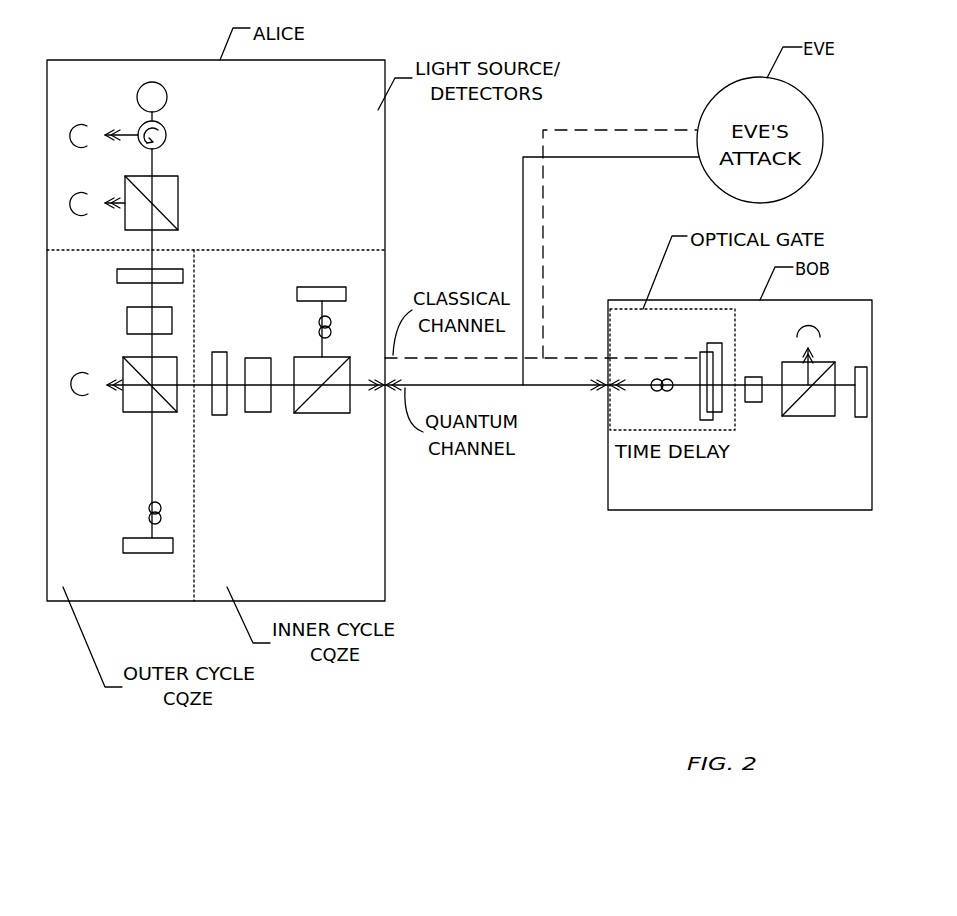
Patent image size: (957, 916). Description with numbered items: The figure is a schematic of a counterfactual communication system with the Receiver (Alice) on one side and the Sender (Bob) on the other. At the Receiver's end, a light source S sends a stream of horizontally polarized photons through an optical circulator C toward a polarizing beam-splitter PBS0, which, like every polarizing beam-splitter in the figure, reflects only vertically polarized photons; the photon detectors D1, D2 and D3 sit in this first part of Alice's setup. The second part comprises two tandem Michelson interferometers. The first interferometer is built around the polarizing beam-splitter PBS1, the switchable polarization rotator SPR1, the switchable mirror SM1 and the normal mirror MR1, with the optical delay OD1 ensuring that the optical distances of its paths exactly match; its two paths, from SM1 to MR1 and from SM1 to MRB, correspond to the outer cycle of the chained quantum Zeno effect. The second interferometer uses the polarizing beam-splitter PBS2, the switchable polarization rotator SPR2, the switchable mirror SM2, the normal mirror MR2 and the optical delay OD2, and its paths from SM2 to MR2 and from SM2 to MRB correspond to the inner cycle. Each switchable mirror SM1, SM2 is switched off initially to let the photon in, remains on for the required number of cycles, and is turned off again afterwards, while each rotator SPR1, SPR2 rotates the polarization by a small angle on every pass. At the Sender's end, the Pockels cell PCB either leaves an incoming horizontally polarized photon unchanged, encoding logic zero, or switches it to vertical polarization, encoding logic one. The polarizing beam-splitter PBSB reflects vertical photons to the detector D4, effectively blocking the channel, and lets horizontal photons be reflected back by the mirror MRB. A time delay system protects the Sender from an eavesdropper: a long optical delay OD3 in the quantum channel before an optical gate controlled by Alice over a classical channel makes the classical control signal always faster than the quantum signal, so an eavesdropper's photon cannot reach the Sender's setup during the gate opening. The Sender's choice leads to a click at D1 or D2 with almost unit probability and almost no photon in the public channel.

The light source S is at (163, 101).
The optical circulator C is at (147, 135).
The photon detector D1 is at (74, 122).
The photon detector D2 is at (74, 221).
The photon detector D3 is at (77, 403).
The photon detector D4 is at (822, 330).
The polarizing beam-splitter PBS0 is at (169, 203).
The polarizing beam-splitter PBS1 is at (136, 415).
The polarizing beam-splitter PBS2 is at (322, 404).
The polarizing beam-splitter PBSB is at (808, 401).
The switchable mirror SM1 is at (122, 281).
The switchable mirror SM2 is at (220, 403).
The switchable polarization rotator SPR1 is at (117, 322).
The switchable polarization rotator SPR2 is at (258, 415).
The optical delay OD1 is at (131, 516).
The optical delay OD2 is at (301, 330).
The optical delay OD3 is at (664, 401).
The normal mirror MR1 is at (148, 563).
The normal mirror MR2 is at (321, 310).
The normal mirror MRB is at (861, 417).
The Pockels cell PCB is at (753, 402).